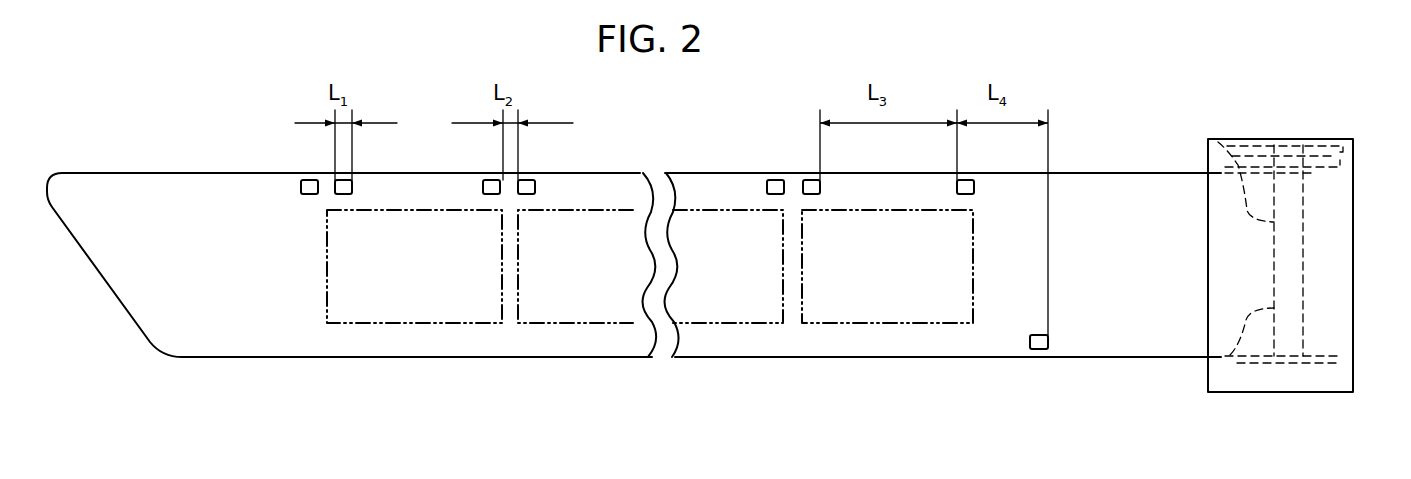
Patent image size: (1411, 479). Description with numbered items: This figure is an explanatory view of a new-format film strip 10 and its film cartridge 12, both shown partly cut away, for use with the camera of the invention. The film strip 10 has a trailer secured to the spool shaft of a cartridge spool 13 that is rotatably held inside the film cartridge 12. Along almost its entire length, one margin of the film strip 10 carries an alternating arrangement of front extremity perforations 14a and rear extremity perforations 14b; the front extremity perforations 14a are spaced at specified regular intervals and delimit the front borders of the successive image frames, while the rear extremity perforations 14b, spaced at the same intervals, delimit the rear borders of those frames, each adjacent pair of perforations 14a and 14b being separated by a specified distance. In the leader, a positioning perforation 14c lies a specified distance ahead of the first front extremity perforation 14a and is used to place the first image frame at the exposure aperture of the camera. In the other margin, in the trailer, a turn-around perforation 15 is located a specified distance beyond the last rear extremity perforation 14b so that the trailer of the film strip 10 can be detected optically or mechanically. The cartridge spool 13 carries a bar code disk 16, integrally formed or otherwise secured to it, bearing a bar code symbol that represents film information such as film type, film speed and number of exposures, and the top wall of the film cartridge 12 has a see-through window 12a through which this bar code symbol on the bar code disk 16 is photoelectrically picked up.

The film strip 10 is at (270, 153).
The front extremity perforations 14a is at (352, 187).
The rear extremity perforations 14b is at (493, 178).
The positioning perforation 14c is at (300, 194).
The turn-around perforation 15 is at (1033, 349).
The film cartridge 12 is at (1208, 372).
The see-through window 12a is at (1317, 138).
The cartridge spool 13 is at (1305, 268).
The bar code disk 16 is at (1218, 138).